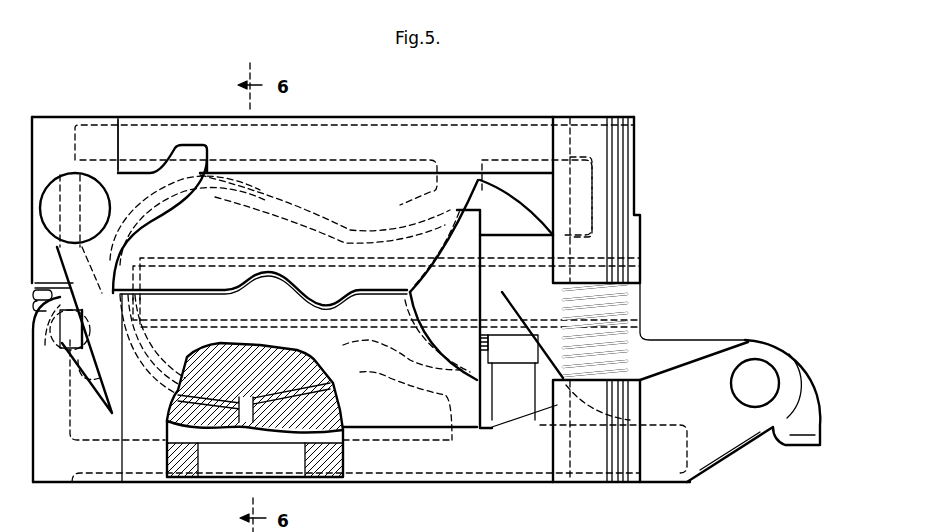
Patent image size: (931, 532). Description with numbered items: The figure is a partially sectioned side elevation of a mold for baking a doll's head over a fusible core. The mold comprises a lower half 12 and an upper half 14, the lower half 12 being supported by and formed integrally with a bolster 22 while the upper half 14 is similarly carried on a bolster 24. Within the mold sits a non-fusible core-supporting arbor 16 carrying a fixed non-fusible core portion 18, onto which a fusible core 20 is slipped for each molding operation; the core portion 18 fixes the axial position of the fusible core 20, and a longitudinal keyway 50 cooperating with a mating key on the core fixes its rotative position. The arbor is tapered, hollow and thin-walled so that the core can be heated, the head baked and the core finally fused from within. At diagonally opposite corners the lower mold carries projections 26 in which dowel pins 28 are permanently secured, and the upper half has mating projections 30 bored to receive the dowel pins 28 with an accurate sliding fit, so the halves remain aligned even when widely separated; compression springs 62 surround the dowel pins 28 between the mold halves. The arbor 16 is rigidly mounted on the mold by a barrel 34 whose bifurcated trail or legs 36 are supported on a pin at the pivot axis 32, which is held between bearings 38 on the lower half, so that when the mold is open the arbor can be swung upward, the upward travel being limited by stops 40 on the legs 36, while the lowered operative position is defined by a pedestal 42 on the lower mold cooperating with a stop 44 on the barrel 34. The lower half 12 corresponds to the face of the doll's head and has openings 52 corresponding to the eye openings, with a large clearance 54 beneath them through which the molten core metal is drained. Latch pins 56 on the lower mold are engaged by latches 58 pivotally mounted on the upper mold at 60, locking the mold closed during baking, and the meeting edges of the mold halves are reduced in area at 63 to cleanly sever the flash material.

The lower half 12 is at (208, 420).
The upper half 14 is at (257, 227).
The non-fusible core-supporting arbor 16 is at (341, 238).
The non-fusible core portion 18 is at (460, 225).
The fusible core 20 is at (253, 227).
The bolster 22 is at (455, 460).
The bolster 24 is at (98, 138).
The projections 26 is at (605, 465).
The dowel pins 28 is at (618, 186).
The mating projections 30 is at (628, 142).
The pin 32 is at (757, 398).
The barrel 34 is at (498, 245).
The bifurcated legs 36 is at (672, 347).
The bearings 38 is at (713, 447).
The stops 40 is at (797, 432).
The pedestal 42 is at (513, 405).
The stop 44 is at (505, 358).
The longitudinal keyway 50 is at (206, 270).
The openings 52 is at (245, 420).
The clearance 54 is at (272, 462).
The latch pins 56 is at (62, 343).
The latches 58 is at (100, 268).
The pivot pin 60 is at (62, 190).
The compression springs 62 is at (57, 290).
The reduced meeting edges 63 is at (292, 282).